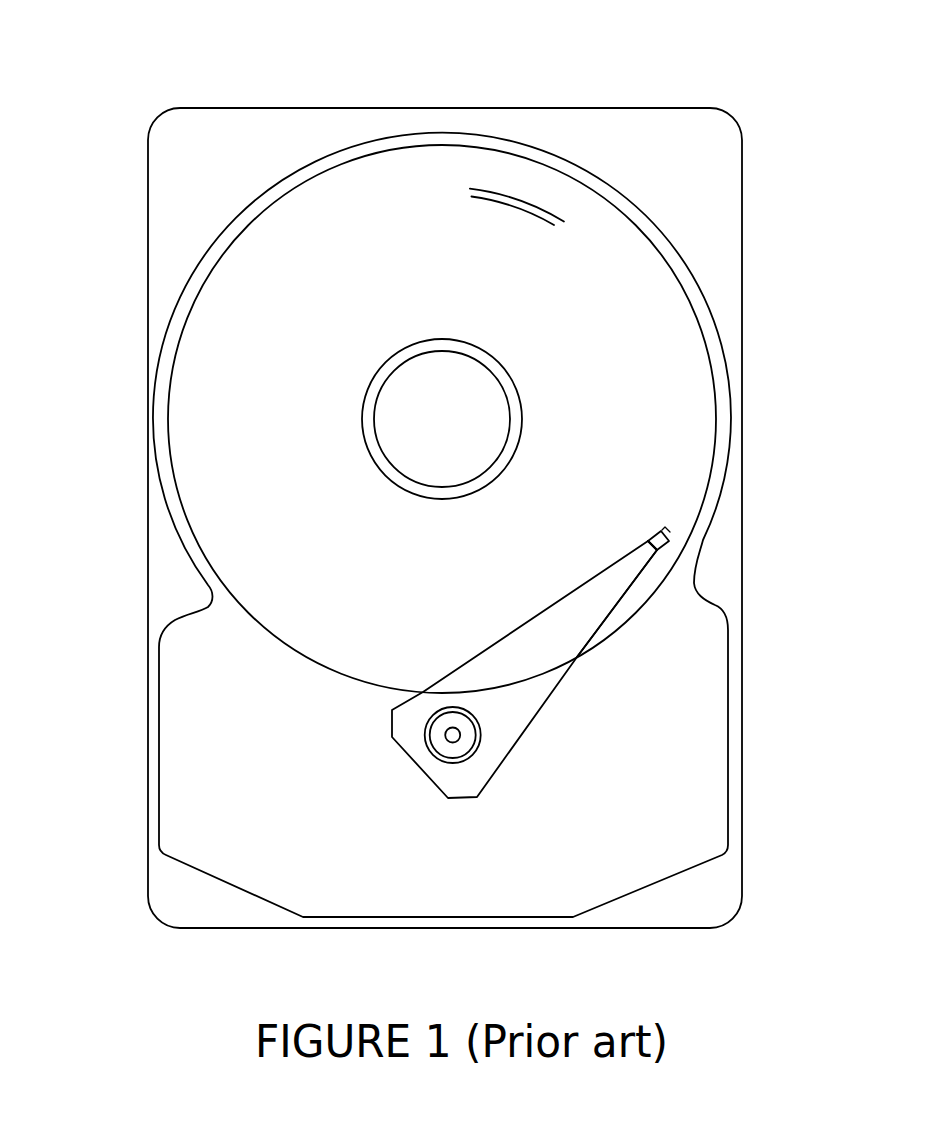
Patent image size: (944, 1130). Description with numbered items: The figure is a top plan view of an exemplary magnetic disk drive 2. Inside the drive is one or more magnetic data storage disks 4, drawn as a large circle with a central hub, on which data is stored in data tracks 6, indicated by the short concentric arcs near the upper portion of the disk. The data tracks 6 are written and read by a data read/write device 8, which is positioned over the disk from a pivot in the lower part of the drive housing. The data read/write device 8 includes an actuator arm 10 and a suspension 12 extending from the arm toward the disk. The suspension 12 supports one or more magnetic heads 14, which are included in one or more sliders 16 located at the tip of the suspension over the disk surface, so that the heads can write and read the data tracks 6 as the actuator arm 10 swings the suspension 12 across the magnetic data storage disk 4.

The magnetic disk drive 2 is at (122, 173).
The magnetic data storage disk 4 is at (335, 213).
The data tracks 6 is at (492, 187).
The data read/write device 8 is at (616, 640).
The actuator arm 10 is at (515, 682).
The suspension 12 is at (647, 552).
The magnetic head 14 is at (744, 516).
The slider 16 is at (668, 530).